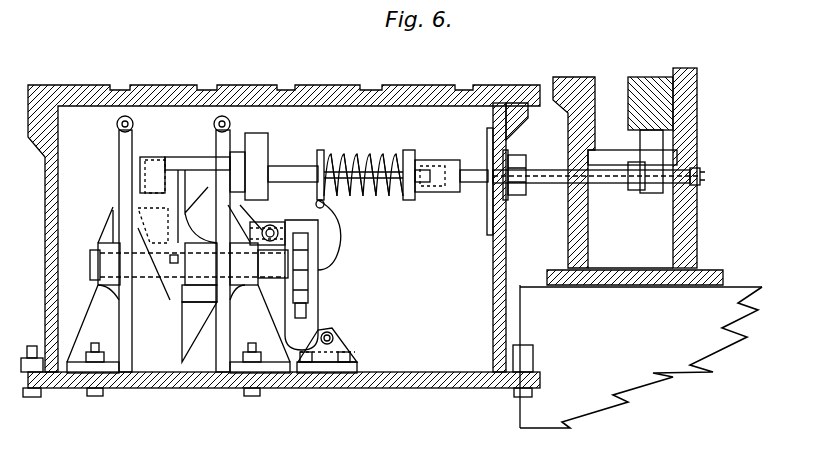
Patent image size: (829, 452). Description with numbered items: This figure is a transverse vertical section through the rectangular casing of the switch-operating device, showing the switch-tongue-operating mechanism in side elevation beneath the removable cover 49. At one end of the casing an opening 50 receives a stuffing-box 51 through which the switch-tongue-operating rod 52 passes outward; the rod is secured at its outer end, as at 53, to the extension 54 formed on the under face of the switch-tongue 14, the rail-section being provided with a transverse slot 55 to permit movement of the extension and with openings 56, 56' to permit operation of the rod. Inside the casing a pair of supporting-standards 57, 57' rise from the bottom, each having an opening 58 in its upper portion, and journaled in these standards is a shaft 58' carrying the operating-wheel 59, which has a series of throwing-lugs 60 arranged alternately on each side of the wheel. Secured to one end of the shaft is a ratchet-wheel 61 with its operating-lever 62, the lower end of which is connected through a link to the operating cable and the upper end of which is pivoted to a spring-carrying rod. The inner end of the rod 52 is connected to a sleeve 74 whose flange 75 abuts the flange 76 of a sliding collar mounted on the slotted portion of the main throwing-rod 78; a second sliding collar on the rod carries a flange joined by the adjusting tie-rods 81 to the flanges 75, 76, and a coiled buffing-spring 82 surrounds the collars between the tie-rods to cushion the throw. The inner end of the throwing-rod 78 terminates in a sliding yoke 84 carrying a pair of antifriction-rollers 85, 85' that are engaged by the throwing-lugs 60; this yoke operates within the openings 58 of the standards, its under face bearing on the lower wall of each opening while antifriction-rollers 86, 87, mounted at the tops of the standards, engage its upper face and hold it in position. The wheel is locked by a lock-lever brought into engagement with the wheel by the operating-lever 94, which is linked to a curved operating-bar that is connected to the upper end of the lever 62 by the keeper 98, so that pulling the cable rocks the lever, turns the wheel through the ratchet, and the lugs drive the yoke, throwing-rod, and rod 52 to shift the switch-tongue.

The switch-tongue 14 is at (649, 80).
The removable cover 49 is at (253, 84).
The opening 50 is at (508, 203).
The stuffing-box 51 is at (528, 166).
The switch-tongue-operating rod 52 is at (472, 168).
The securing point 53 is at (640, 195).
The extension 54 is at (652, 198).
The transverse slot 55 is at (632, 151).
The opening 56 is at (596, 184).
The opening 56' is at (708, 177).
The supporting-standard 57 is at (93, 301).
The supporting-standard 57' is at (260, 319).
The opening 58 is at (192, 196).
The shaft 58' is at (81, 265).
The operating-wheel 59 is at (201, 264).
The throwing-lugs 60 is at (177, 266).
The ratchet-wheel 61 is at (286, 283).
The operating-lever 62 is at (310, 297).
The sleeve 74 is at (438, 168).
The flange 75 is at (408, 198).
The flange 76 is at (407, 160).
The main throwing-rod 78 is at (293, 168).
The adjusting tie-rods 81 is at (369, 197).
The coiled buffing-spring 82 is at (386, 162).
The sliding yoke 84 is at (249, 166).
The antifriction-roller 85 is at (153, 167).
The antifriction-roller 85' is at (229, 155).
The antifriction-roller 86 is at (116, 125).
The antifriction-roller 87 is at (213, 124).
The operating-lever 94 is at (242, 228).
The keeper 98 is at (268, 225).